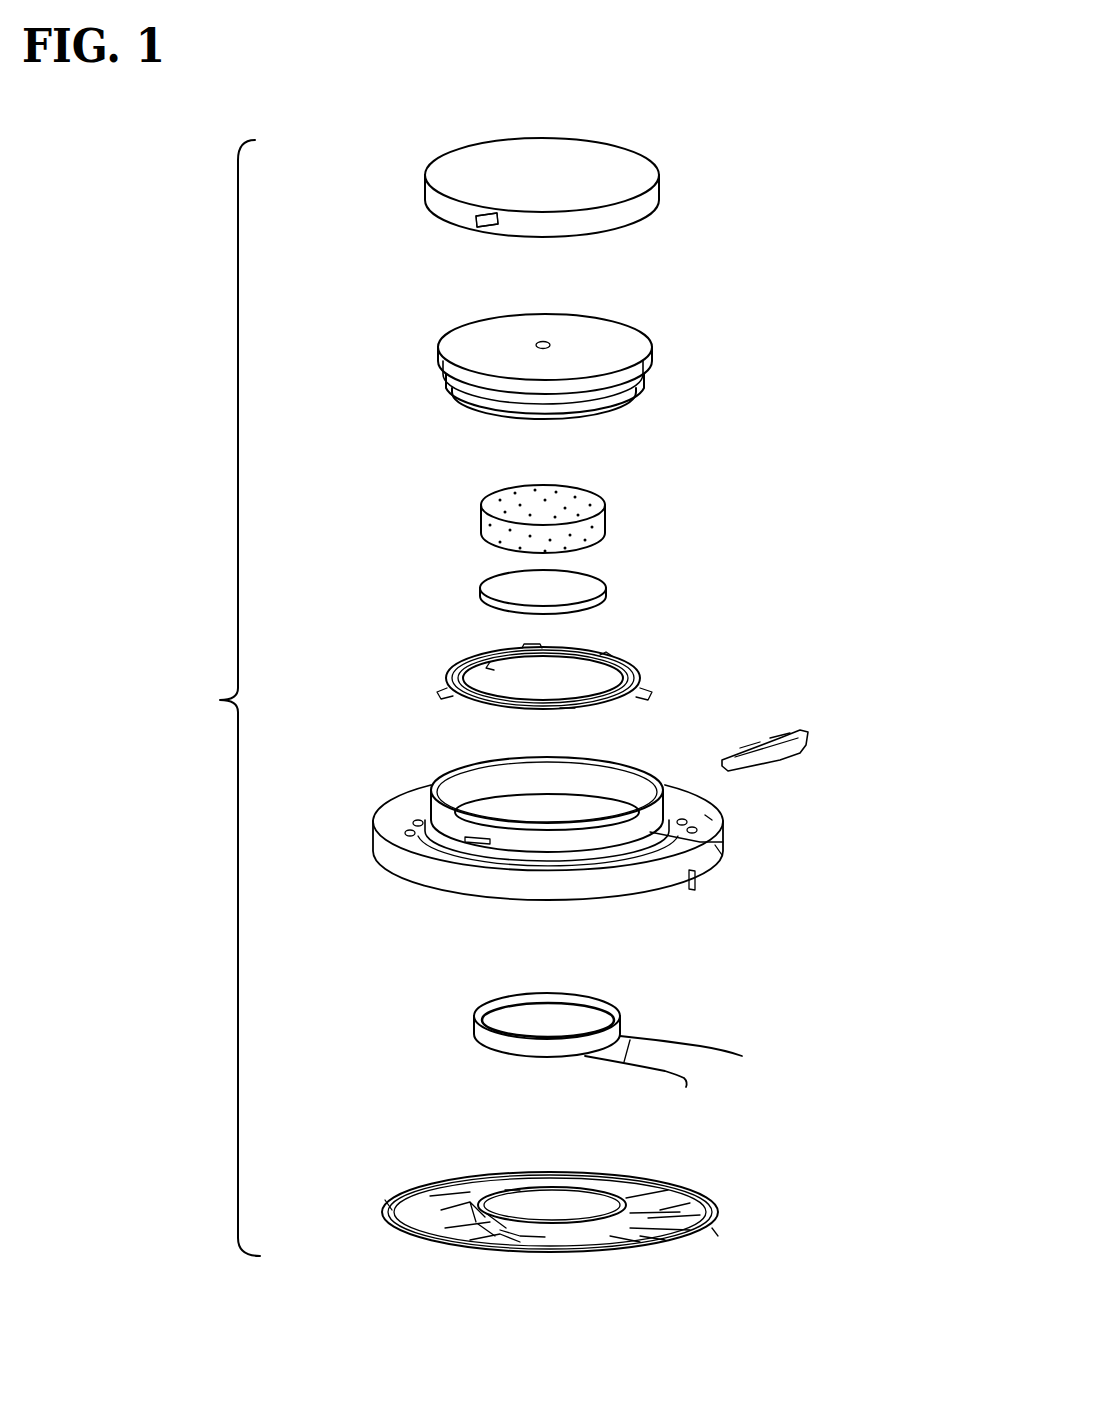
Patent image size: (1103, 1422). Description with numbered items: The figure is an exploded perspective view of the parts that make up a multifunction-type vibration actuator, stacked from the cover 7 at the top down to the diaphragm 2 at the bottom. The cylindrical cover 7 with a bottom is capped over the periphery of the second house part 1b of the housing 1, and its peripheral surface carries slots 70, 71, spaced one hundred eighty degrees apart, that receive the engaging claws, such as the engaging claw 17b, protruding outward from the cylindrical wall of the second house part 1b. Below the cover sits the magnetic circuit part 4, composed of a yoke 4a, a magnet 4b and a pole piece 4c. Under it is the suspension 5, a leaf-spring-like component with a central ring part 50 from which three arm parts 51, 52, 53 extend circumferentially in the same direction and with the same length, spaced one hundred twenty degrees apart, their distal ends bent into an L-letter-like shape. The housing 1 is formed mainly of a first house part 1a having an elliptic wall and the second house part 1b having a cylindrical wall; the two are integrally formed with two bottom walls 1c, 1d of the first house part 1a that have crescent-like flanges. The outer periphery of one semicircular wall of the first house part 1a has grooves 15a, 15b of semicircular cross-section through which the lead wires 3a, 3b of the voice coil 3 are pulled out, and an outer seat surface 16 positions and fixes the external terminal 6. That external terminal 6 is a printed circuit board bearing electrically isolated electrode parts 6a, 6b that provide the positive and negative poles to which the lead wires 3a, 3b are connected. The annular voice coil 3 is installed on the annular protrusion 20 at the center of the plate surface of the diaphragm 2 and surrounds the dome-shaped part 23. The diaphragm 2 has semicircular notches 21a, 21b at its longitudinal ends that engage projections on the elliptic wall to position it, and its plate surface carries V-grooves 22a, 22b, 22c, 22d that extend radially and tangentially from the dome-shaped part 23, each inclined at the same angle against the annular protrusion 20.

The cover 7 is at (467, 181).
The slot 70 is at (478, 224).
The slot 71 is at (487, 220).
The magnetic circuit part 4 is at (408, 315).
The yoke 4a is at (632, 346).
The magnet 4b is at (578, 500).
The pole piece 4c is at (578, 590).
The suspension 5 is at (545, 668).
The ring part 50 is at (490, 664).
The arm part 51 is at (606, 660).
The arm part 52 is at (570, 709).
The arm part 53 is at (447, 690).
The external terminal 6 is at (777, 709).
The electrode part 6a is at (772, 738).
The electrode part 6b is at (740, 748).
The housing 1 is at (577, 834).
The first house part 1a is at (405, 860).
The second house part 1b is at (512, 778).
The bottom wall 1c is at (700, 830).
The bottom wall 1d is at (400, 812).
The groove 15a is at (722, 855).
The groove 15b is at (692, 890).
The seat surface 16 is at (710, 816).
The engaging claw 17b is at (460, 838).
The voice coil 3 is at (634, 998).
The lead wire 3a is at (707, 1050).
The lead wire 3b is at (646, 1064).
The diaphragm 2 is at (546, 1189).
The annular protrusion 20 is at (512, 1195).
The semicircular notch 21a is at (718, 1232).
The semicircular notch 21b is at (392, 1205).
The V-groove 22a is at (670, 1205).
The V-groove 22b is at (455, 1195).
The V-groove 22c is at (632, 1205).
The V-groove 22d is at (430, 1235).
The dome-shaped part 23 is at (555, 1200).